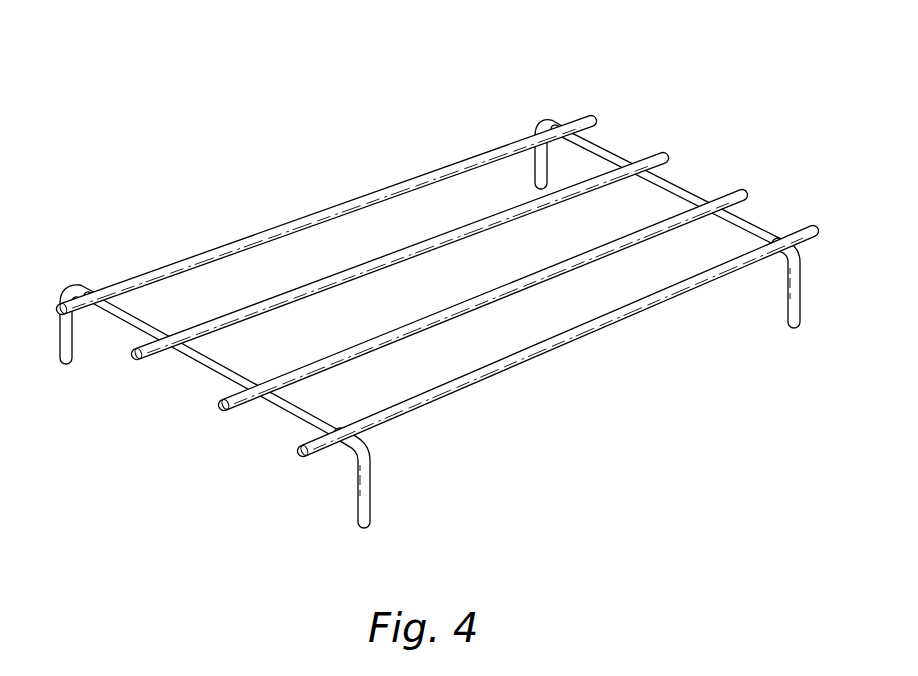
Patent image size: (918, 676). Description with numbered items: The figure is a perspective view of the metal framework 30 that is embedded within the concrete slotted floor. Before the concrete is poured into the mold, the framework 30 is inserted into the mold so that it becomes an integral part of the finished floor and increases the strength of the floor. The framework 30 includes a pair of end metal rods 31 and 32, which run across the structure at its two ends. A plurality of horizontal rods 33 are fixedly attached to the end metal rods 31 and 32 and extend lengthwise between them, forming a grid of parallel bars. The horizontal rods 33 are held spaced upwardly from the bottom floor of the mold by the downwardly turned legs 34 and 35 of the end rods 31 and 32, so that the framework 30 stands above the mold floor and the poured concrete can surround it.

The metal framework 30 is at (262, 192).
The end metal rod 31 is at (208, 374).
The end metal rod 32 is at (678, 184).
The horizontal rods 33 is at (598, 117).
The downwardly turned leg 34 is at (374, 482).
The downwardly turned leg 35 is at (790, 288).